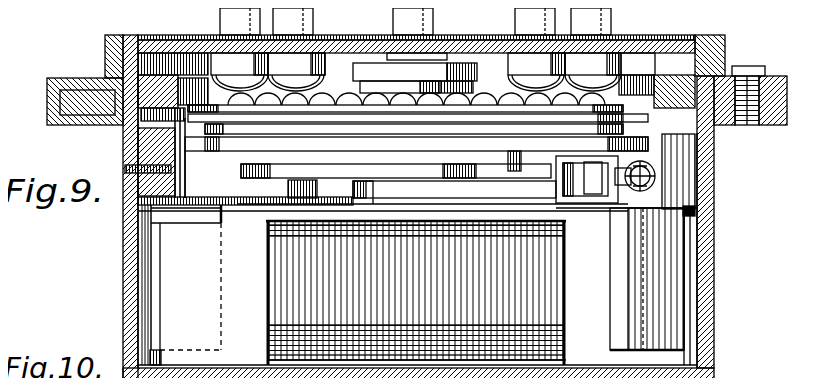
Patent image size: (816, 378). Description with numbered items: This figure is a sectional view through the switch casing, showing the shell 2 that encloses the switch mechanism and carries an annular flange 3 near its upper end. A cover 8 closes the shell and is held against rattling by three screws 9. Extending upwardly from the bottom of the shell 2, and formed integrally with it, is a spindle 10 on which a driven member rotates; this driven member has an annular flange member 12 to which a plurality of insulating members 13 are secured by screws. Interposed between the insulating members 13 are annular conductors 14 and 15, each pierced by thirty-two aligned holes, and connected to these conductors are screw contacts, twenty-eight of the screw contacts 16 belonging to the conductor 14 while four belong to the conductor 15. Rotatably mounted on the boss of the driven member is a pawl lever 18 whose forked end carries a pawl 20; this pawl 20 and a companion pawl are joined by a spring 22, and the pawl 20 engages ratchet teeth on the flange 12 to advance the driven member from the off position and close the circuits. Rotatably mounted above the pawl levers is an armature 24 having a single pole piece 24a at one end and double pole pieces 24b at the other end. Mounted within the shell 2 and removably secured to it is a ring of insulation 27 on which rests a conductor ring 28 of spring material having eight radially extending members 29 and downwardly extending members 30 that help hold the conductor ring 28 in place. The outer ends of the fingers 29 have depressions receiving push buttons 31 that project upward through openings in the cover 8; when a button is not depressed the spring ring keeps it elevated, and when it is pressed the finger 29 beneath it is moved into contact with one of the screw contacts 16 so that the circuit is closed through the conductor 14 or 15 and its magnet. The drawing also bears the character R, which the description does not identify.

The shell 2 is at (702, 333).
The annular flange 3 is at (614, 124).
The cover 8 is at (110, 30).
The screws 9 is at (732, 62).
The spindle 10 is at (430, 47).
The annular flange member 12 is at (240, 162).
The insulating members 13 is at (612, 107).
The annular conductor 14 is at (135, 110).
The annular conductor 15 is at (190, 134).
The screw contacts 16 is at (500, 86).
The pawl lever 18 is at (552, 186).
The pawl 20 is at (611, 176).
The spring 22 is at (650, 172).
The armature 24 is at (677, 204).
The single pole piece 24a is at (180, 212).
The double pole pieces 24b is at (672, 272).
The ring of insulation 27 is at (112, 73).
The conductor ring 28 is at (662, 65).
The radially extending members 29 is at (624, 66).
The downwardly extending members 30 is at (180, 67).
The push buttons 31 is at (388, 13).
The motor R is at (290, 267).